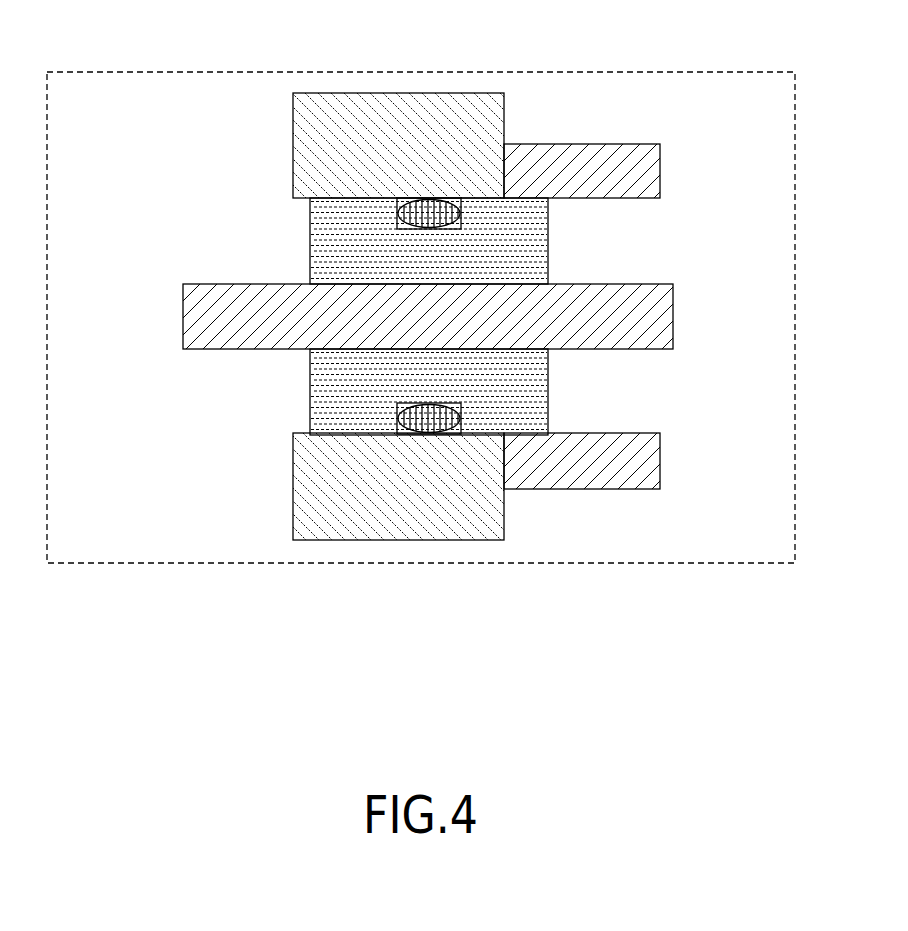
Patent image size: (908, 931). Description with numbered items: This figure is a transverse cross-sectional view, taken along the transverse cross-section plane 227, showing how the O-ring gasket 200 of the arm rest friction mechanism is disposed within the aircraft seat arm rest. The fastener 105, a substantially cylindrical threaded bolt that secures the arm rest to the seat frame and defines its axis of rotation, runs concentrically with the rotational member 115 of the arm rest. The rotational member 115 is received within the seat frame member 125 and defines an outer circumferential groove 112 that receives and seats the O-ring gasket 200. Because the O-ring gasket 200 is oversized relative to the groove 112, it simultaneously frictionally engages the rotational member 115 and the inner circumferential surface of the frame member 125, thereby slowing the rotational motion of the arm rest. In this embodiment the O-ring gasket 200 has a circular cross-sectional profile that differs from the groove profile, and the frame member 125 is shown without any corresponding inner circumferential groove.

The fastener 105 is at (183, 323).
The outer circumferential groove 112 is at (397, 226).
The rotational member 115 is at (310, 257).
The seat frame member 125 is at (293, 142).
The O-ring gasket 200 is at (429, 213).
The transverse cross-section plane 227 is at (796, 119).